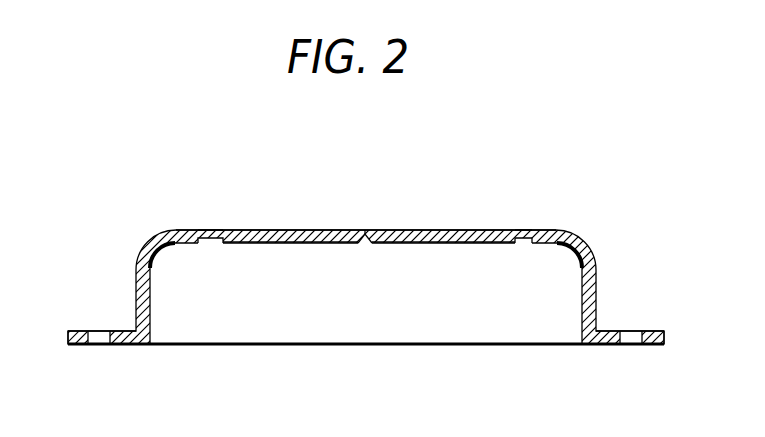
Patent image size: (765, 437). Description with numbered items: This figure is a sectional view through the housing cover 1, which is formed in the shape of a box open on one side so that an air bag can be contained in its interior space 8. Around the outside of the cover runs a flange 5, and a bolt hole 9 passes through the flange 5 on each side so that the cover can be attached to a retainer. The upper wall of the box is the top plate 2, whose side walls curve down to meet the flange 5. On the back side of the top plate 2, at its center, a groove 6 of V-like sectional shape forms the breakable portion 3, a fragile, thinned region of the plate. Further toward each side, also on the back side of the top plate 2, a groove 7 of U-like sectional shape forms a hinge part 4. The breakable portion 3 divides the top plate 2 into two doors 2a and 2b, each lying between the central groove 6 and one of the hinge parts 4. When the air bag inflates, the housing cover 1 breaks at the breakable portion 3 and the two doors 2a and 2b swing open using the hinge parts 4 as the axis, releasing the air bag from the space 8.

The housing cover 1 is at (157, 219).
The top plate 2 is at (182, 229).
The door 2a is at (450, 229).
The door 2b is at (297, 229).
The breakable portion 3 is at (366, 232).
The hinge part 4 is at (213, 229).
The flange 5 is at (82, 331).
The groove 6 is at (362, 244).
The groove 7 is at (207, 244).
The space 8 is at (413, 327).
The bolt hole 9 is at (100, 345).